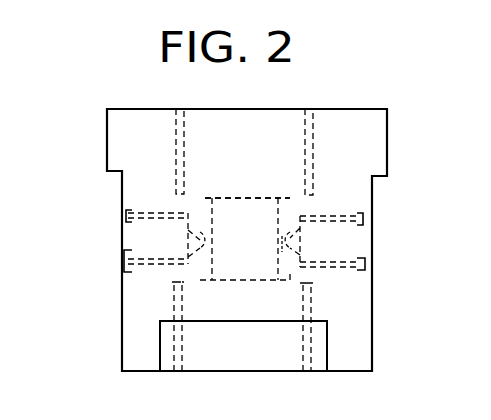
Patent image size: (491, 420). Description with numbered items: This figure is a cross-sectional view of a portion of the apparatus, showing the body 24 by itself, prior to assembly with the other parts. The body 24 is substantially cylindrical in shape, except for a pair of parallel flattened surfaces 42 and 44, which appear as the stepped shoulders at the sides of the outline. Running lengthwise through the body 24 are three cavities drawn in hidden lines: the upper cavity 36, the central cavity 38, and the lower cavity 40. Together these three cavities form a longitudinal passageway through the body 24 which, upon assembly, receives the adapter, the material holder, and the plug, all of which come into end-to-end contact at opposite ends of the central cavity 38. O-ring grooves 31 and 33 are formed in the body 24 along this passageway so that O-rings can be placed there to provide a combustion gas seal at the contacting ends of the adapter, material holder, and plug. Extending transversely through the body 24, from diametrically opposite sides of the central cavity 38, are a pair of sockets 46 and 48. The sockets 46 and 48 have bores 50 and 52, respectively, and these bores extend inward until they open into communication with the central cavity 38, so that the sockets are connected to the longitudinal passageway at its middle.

The body 24 is at (391, 150).
The O-ring groove 31 is at (215, 204).
The O-ring groove 33 is at (200, 277).
The upper cavity 36 is at (300, 132).
The central cavity 38 is at (214, 213).
The lower cavity 40 is at (301, 289).
The flattened surface 42 is at (122, 185).
The flattened surface 44 is at (162, 350).
The socket 46 is at (145, 253).
The socket 48 is at (335, 250).
The bore 50 is at (216, 240).
The bore 52 is at (279, 239).